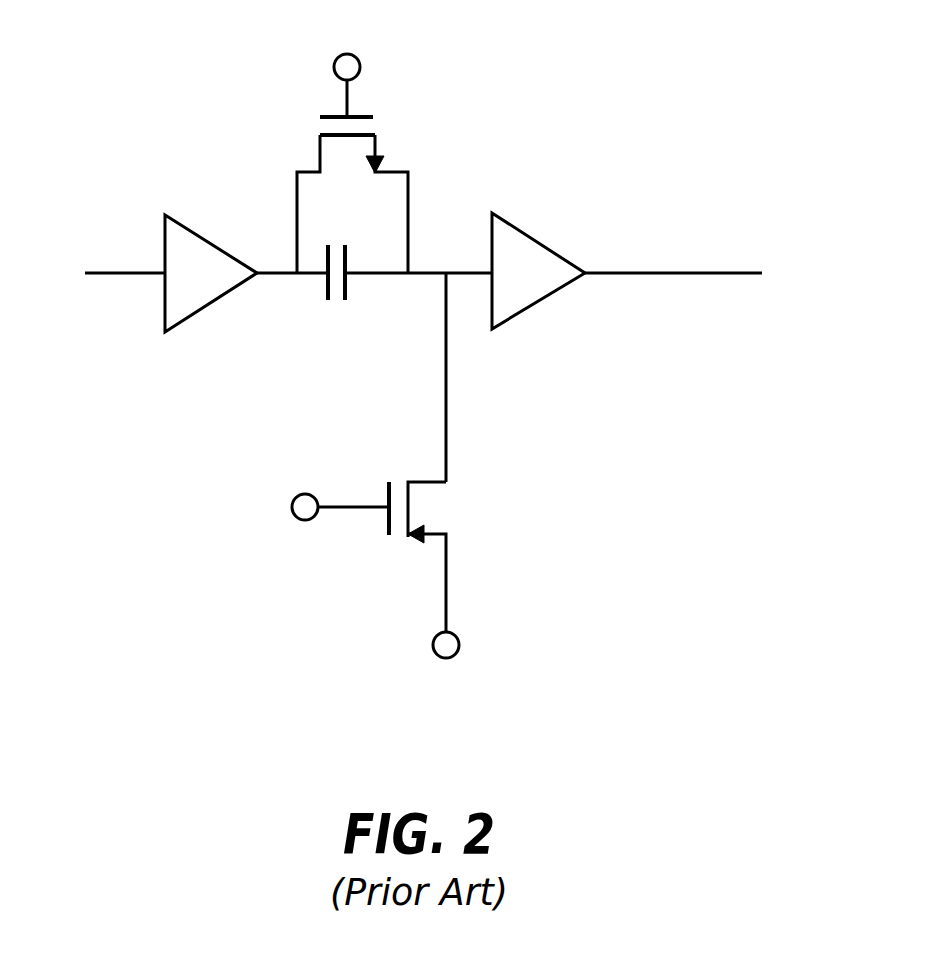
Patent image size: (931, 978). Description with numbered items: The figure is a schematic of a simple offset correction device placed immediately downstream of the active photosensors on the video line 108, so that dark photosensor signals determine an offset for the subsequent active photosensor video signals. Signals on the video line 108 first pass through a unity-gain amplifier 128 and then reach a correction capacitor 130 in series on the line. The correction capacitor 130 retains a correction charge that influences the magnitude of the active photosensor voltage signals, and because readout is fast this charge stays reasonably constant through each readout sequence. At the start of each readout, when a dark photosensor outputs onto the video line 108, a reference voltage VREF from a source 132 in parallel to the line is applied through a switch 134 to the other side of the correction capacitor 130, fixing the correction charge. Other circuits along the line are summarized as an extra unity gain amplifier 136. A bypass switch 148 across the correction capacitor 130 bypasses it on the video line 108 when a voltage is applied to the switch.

The video line 108 is at (120, 272).
The unity-gain amplifier 128 is at (220, 244).
The correction capacitor 130 is at (325, 282).
The source 132 is at (460, 643).
The switch 134 is at (433, 485).
The extra unity gain amplifier 136 is at (517, 228).
The bypass switch 148 is at (360, 112).